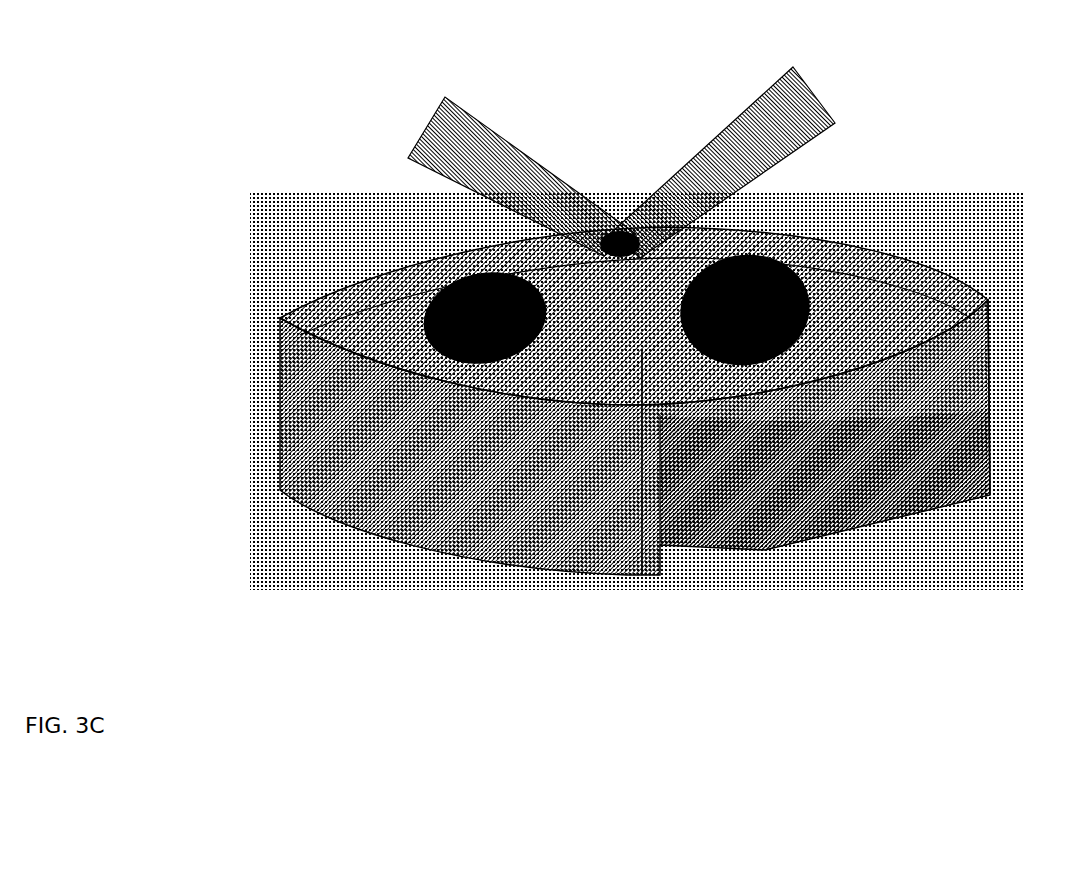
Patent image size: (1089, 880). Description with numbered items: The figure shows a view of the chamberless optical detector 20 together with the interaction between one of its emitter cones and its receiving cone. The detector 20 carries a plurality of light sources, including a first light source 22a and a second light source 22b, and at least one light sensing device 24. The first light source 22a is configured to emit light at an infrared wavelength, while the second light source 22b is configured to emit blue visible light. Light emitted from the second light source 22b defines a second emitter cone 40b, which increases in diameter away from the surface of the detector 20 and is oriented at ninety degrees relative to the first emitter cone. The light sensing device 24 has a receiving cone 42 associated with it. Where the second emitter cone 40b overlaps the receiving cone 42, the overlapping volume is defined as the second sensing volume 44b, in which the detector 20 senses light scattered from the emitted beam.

The detector 20 is at (624, 381).
The first light source 22a is at (628, 590).
The second light source 22b is at (417, 262).
The light sensing device 24 is at (988, 298).
The second emitter cone 40b is at (817, 98).
The receiving cone 42 is at (516, 147).
The second sensing volume 44b is at (695, 223).